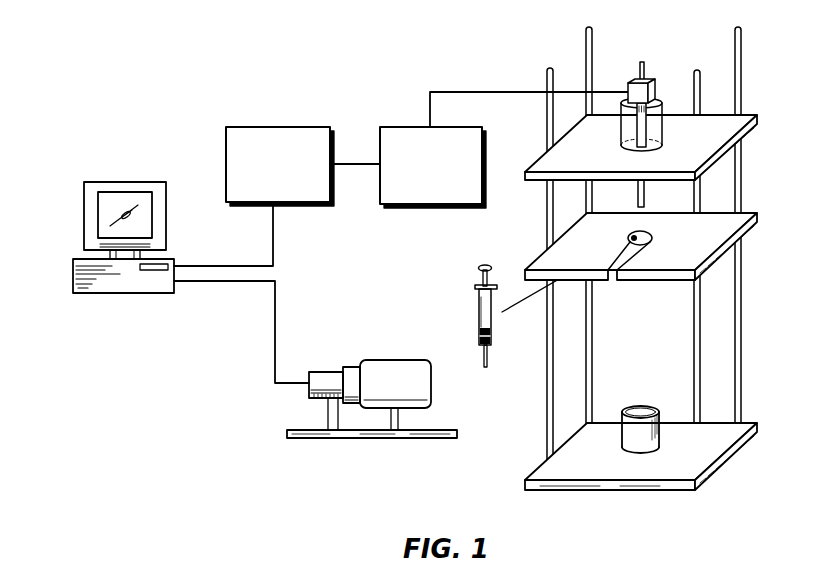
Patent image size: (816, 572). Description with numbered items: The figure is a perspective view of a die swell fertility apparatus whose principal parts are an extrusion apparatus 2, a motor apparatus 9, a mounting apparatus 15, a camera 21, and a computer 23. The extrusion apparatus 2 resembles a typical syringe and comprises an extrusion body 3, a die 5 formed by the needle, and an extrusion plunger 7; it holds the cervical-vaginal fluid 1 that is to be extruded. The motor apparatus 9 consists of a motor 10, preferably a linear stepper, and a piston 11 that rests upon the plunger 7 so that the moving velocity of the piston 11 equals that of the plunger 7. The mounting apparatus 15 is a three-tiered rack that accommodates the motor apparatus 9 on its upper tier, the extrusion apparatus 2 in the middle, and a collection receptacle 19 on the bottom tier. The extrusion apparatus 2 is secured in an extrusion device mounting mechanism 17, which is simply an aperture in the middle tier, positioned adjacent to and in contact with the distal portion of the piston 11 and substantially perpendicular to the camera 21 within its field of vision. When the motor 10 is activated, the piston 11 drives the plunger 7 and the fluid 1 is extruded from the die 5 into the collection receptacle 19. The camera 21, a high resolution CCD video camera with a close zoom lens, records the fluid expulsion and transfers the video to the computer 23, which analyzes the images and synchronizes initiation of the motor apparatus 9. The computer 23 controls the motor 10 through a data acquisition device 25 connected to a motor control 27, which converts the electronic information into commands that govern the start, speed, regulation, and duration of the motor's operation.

The cervical-vaginal fluid 1 is at (479, 338).
The extrusion apparatus 2 is at (418, 259).
The extrusion body 3 is at (479, 310).
The die 5 is at (488, 355).
The extrusion plunger 7 is at (484, 265).
The motor apparatus 9 is at (632, 268).
The motor 10 is at (652, 92).
The piston 11 is at (637, 128).
The mounting apparatus 15 is at (563, 488).
The extrusion device mounting mechanism 17 is at (648, 235).
The collection receptacle 19 is at (636, 448).
The camera 21 is at (352, 440).
The computer 23 is at (97, 182).
The data acquisition device (DAQ) 25 is at (240, 126).
The motor control 27 is at (405, 127).